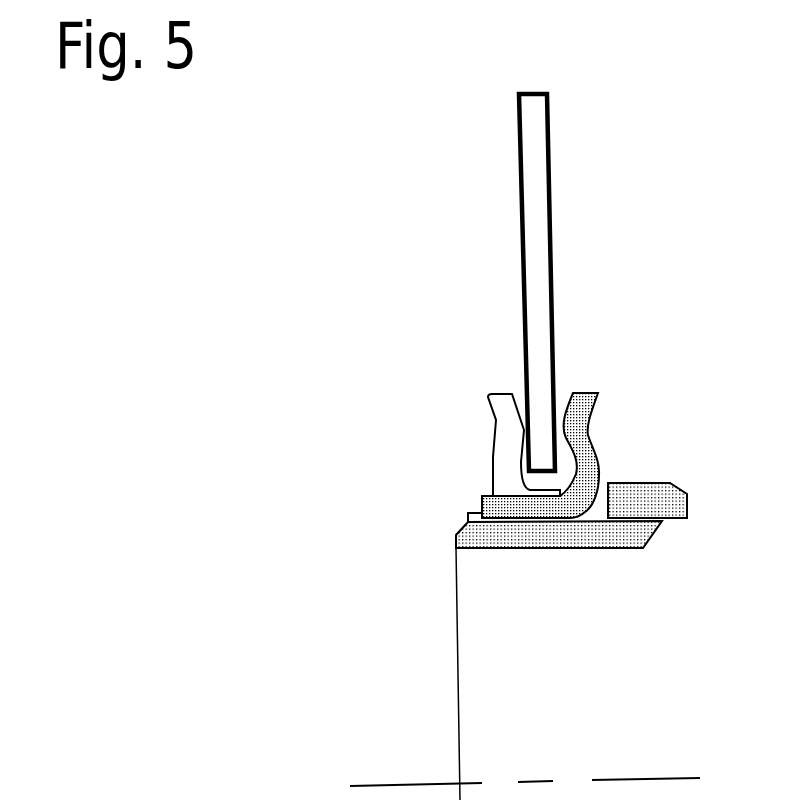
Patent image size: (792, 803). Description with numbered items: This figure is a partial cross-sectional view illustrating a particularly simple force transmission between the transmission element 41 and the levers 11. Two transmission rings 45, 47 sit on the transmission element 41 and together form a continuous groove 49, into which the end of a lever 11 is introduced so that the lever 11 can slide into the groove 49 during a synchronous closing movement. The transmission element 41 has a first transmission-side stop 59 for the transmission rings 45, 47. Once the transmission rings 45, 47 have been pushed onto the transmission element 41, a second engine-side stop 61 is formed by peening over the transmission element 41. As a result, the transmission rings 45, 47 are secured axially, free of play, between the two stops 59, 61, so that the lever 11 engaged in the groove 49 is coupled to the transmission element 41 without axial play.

The lever 11 is at (541, 262).
The transmission element 41 is at (643, 548).
The transmission ring 45 is at (495, 416).
The transmission ring 47 is at (593, 418).
The groove 49 is at (560, 400).
The first transmission-side stop 59 is at (615, 504).
The second engine-side stop 61 is at (467, 520).